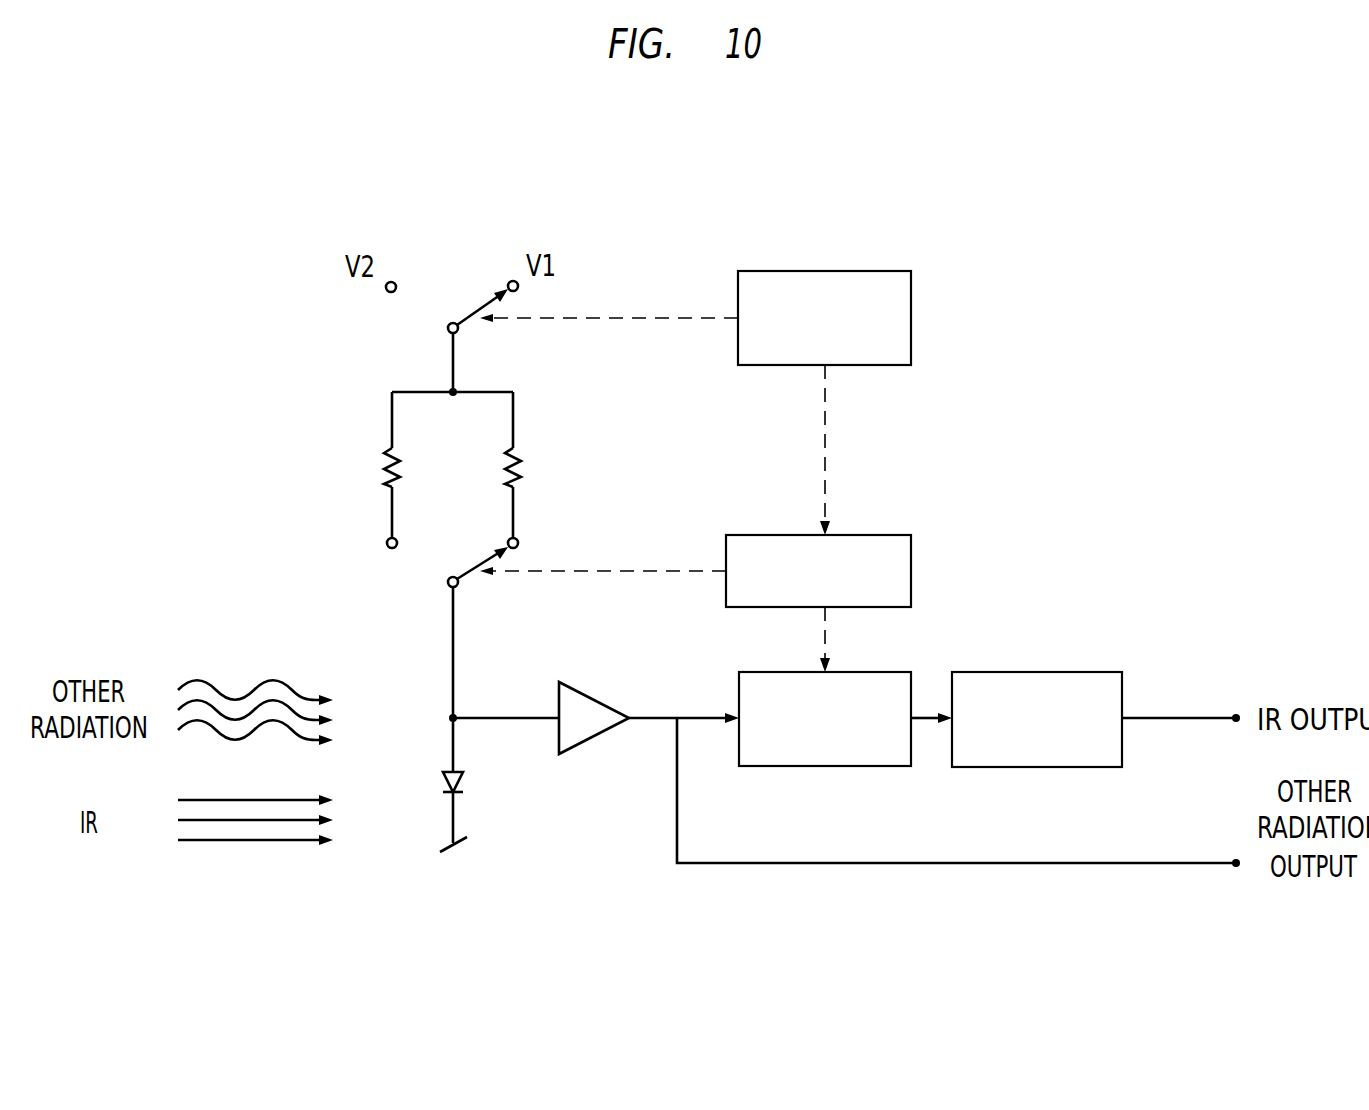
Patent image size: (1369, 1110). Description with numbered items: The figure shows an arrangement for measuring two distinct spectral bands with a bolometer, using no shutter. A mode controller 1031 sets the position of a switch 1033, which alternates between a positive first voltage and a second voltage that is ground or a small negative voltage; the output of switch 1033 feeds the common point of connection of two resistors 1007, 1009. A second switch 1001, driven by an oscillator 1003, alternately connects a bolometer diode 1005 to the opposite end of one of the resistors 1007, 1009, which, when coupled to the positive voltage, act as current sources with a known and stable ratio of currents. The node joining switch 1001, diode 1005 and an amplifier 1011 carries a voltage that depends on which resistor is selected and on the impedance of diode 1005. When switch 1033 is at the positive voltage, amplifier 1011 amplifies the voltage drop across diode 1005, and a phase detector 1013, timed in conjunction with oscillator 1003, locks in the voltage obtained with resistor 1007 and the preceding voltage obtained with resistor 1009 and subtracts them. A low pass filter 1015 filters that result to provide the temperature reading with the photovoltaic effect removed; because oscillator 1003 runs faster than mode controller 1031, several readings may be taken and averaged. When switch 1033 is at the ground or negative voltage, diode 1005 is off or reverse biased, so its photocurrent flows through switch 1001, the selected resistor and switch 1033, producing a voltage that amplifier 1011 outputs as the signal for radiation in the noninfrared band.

The switch 1001 is at (467, 564).
The oscillator 1003 is at (877, 535).
The bolometer diode 1005 is at (464, 777).
The resistor 1007 is at (409, 465).
The resistor 1009 is at (535, 466).
The amplifier 1011 is at (586, 692).
The phase detector 1013 is at (877, 672).
The low pass filter 1015 is at (1052, 672).
The mode controller 1031 is at (877, 271).
The switch 1033 is at (466, 312).